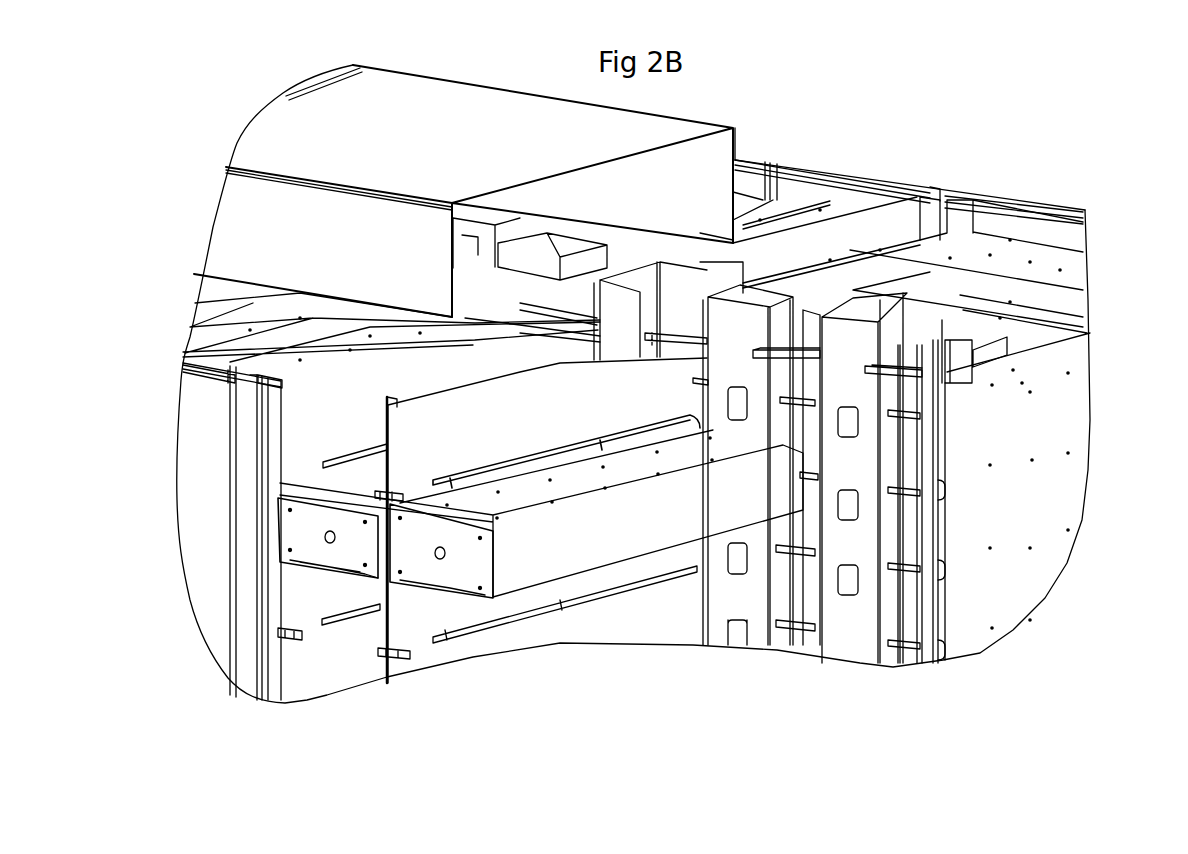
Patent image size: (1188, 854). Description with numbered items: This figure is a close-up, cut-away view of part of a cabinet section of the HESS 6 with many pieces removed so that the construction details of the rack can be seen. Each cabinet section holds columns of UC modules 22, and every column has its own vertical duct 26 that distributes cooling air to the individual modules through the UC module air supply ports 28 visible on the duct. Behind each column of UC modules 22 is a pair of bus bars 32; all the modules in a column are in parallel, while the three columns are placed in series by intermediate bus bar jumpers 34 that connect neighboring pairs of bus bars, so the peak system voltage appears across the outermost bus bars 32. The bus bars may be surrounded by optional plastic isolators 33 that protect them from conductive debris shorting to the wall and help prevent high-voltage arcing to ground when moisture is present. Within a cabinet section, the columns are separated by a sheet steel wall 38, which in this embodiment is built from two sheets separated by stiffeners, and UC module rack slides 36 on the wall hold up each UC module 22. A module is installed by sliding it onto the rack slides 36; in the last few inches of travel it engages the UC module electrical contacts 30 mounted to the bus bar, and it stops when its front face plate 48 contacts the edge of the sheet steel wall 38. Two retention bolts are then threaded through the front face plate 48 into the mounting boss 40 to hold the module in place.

The HESS 6 is at (774, 120).
The UC module 22 is at (560, 545).
The vertical duct 26 is at (867, 648).
The UC module air supply ports 28 is at (915, 647).
The UC module electrical contacts 30 is at (912, 567).
The bus bars 32 is at (900, 370).
The plastic isolators 33 is at (925, 508).
The intermediate bus bar jumpers 34 is at (777, 350).
The UC module rack slides 36 is at (470, 640).
The sheet steel wall 38 is at (413, 627).
The mounting boss 40 is at (397, 650).
The front face plate 48 is at (303, 537).